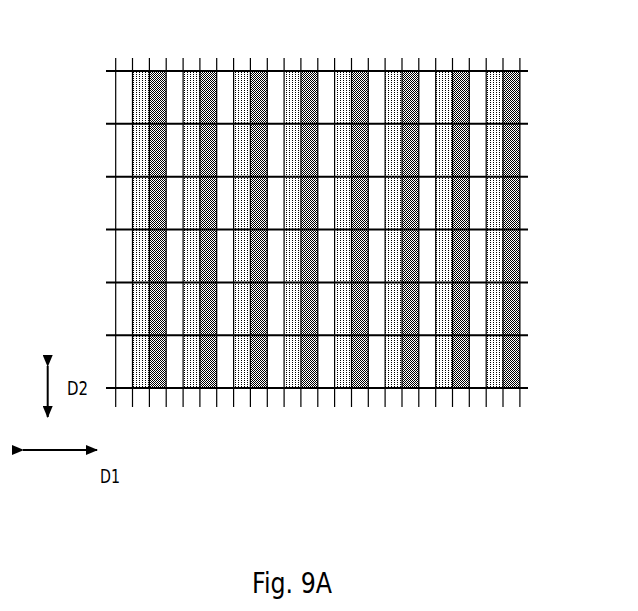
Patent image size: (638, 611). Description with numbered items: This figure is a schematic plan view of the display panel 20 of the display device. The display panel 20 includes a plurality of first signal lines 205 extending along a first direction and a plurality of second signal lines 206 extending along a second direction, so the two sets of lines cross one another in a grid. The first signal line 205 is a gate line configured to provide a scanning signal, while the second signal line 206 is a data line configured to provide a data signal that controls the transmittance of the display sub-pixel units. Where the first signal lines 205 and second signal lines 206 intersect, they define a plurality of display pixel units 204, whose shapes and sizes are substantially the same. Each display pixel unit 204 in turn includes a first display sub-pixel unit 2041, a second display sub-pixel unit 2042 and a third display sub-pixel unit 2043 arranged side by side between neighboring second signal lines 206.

The display panel 20 is at (342, 287).
The display pixel unit 204 is at (489, 310).
The first display sub-pixel unit 2041 is at (480, 380).
The second display sub-pixel unit 2042 is at (495, 380).
The third display sub-pixel unit 2043 is at (510, 380).
The first signal line 205 is at (525, 283).
The second signal line 206 is at (233, 398).